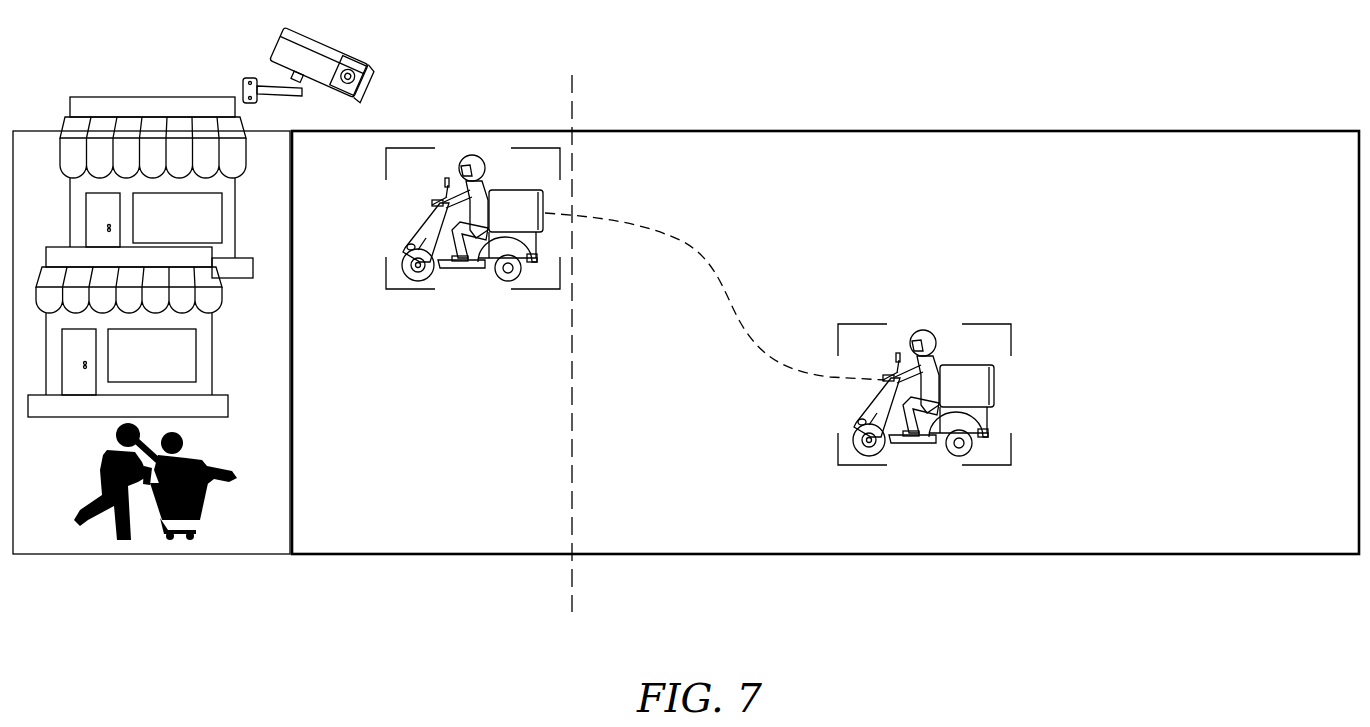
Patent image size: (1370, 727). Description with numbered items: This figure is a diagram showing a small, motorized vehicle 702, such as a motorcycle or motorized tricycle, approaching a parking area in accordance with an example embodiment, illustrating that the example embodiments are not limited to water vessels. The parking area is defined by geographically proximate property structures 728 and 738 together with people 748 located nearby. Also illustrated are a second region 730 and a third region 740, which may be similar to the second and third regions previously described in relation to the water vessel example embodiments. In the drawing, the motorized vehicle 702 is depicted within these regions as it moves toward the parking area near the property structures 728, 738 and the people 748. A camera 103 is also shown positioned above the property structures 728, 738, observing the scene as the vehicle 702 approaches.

The camera 103 is at (330, 45).
The property structure 728 is at (86, 219).
The property structure 738 is at (96, 363).
The people 748 is at (203, 503).
The third region 740 is at (477, 387).
The second region 730 is at (958, 279).
The small motorized vehicle 702 is at (937, 443).